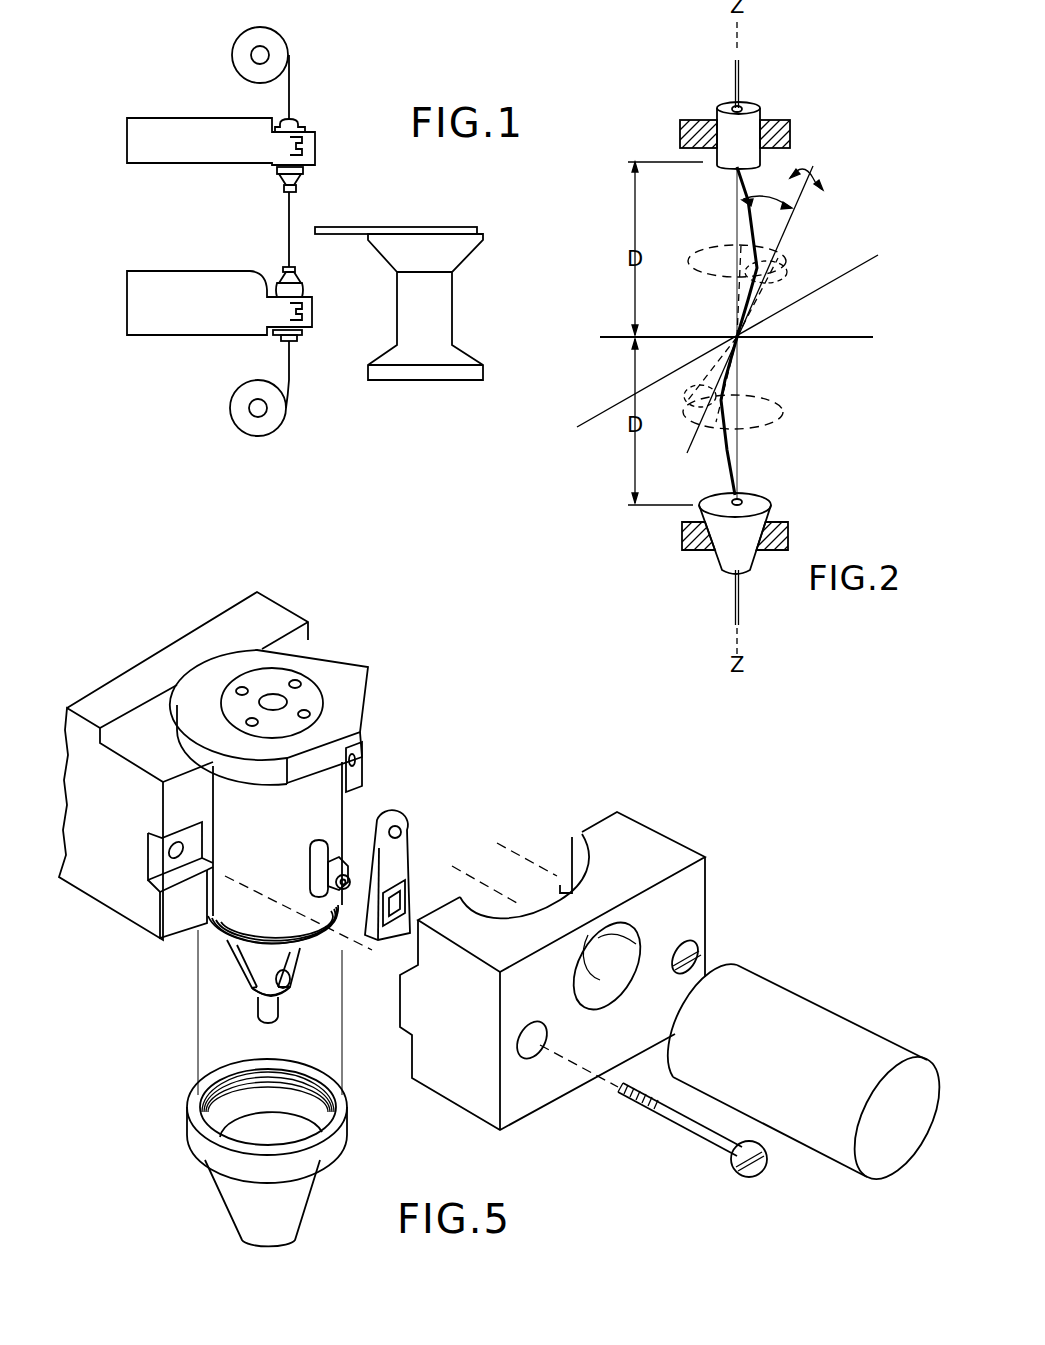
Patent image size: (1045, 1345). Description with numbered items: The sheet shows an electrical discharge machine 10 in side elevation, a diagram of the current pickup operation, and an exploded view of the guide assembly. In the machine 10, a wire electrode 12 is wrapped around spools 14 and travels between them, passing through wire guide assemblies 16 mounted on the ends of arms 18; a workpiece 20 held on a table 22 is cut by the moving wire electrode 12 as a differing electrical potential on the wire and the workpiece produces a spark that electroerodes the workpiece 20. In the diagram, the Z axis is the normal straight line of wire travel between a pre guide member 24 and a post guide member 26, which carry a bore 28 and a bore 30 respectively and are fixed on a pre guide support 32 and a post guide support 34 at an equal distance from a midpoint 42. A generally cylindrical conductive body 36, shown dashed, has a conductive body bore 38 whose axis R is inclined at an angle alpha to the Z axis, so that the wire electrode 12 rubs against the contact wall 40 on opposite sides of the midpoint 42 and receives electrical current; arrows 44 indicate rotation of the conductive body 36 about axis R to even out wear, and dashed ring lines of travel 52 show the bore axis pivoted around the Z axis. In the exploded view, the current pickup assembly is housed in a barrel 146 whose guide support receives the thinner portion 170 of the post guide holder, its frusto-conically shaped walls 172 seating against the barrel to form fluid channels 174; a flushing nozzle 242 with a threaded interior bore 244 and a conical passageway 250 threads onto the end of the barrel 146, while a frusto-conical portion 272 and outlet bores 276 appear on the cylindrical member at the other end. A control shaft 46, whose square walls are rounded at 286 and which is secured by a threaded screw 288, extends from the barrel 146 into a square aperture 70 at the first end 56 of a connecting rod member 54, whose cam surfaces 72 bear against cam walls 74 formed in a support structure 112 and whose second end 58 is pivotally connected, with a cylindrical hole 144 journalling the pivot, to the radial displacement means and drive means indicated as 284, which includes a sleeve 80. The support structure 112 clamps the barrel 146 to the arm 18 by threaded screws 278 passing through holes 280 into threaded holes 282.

In FIG. 1, the electrical discharge machine 10 is at (376, 83).
In FIG. 1, the wire electrode 12 is at (290, 78).
In FIG. 2, the wire electrode 12 is at (740, 78).
In FIG. 1, the spools 14 is at (237, 46).
In FIG. 1, the wire guide assemblies 16 is at (308, 180).
In FIG. 1, the arms 18 is at (216, 152).
In FIG. 5, the arms 18 is at (237, 627).
In FIG. 1, the workpiece 20 is at (390, 227).
In FIG. 1, the table 22 is at (440, 312).
In FIG. 2, the pre guide member 24 is at (761, 128).
In FIG. 2, the post guide member 26 is at (745, 553).
In FIG. 5, the post guide member 26 is at (230, 982).
In FIG. 2, the bore 28 is at (734, 108).
In FIG. 2, the bore 30 is at (745, 500).
In FIG. 2, the pre guide support 32 is at (790, 134).
In FIG. 2, the post guide support 34 is at (682, 536).
In FIG. 2, the conductive body 36 is at (752, 362).
In FIG. 2, the conductive body bore 38 is at (775, 272).
In FIG. 2, the contact wall 40 is at (765, 300).
In FIG. 2, the midpoint 42 is at (726, 326).
In FIG. 2, the arrows 44 is at (826, 184).
In FIG. 5, the control shaft 46 is at (298, 889).
In FIG. 2, the dashed ring lines of travel 52 is at (707, 246).
In FIG. 5, the connecting rod member 54 is at (421, 853).
In FIG. 5, the first end 56 is at (383, 950).
In FIG. 5, the second end 58 is at (378, 822).
In FIG. 5, the square aperture 70 is at (400, 900).
In FIG. 5, the connecting rod cam surfaces 72 is at (338, 905).
In FIG. 5, the cam walls 74 is at (627, 943).
In FIG. 5, the sleeve 80 is at (606, 960).
In FIG. 5, the support structure 112 is at (637, 838).
In FIG. 5, the cylindrical hole 144 is at (400, 832).
In FIG. 5, the barrel 146 is at (293, 845).
In FIG. 5, the thinner portion 170 is at (250, 1021).
In FIG. 5, the frusto-conically shaped walls 172 is at (292, 962).
In FIG. 5, the fluid channels 174 is at (240, 957).
In FIG. 5, the flushing nozzle 242 is at (212, 1193).
In FIG. 5, the threaded interior bore 244 is at (223, 1084).
In FIG. 5, the conical passageway 250 is at (314, 1128).
In FIG. 5, the frusto-conical portion 272 is at (285, 698).
In FIG. 5, the outlet bores 276 is at (297, 682).
In FIG. 5, the threaded screws 278 is at (325, 845).
In FIG. 5, the holes 280 is at (697, 940).
In FIG. 5, the threaded holes 282 is at (148, 877).
In FIG. 5, the radial displacement means and drive means 284 is at (815, 1079).
In FIG. 5, the rounded walls 286 is at (405, 807).
In FIG. 5, the threaded screw 288 is at (350, 880).